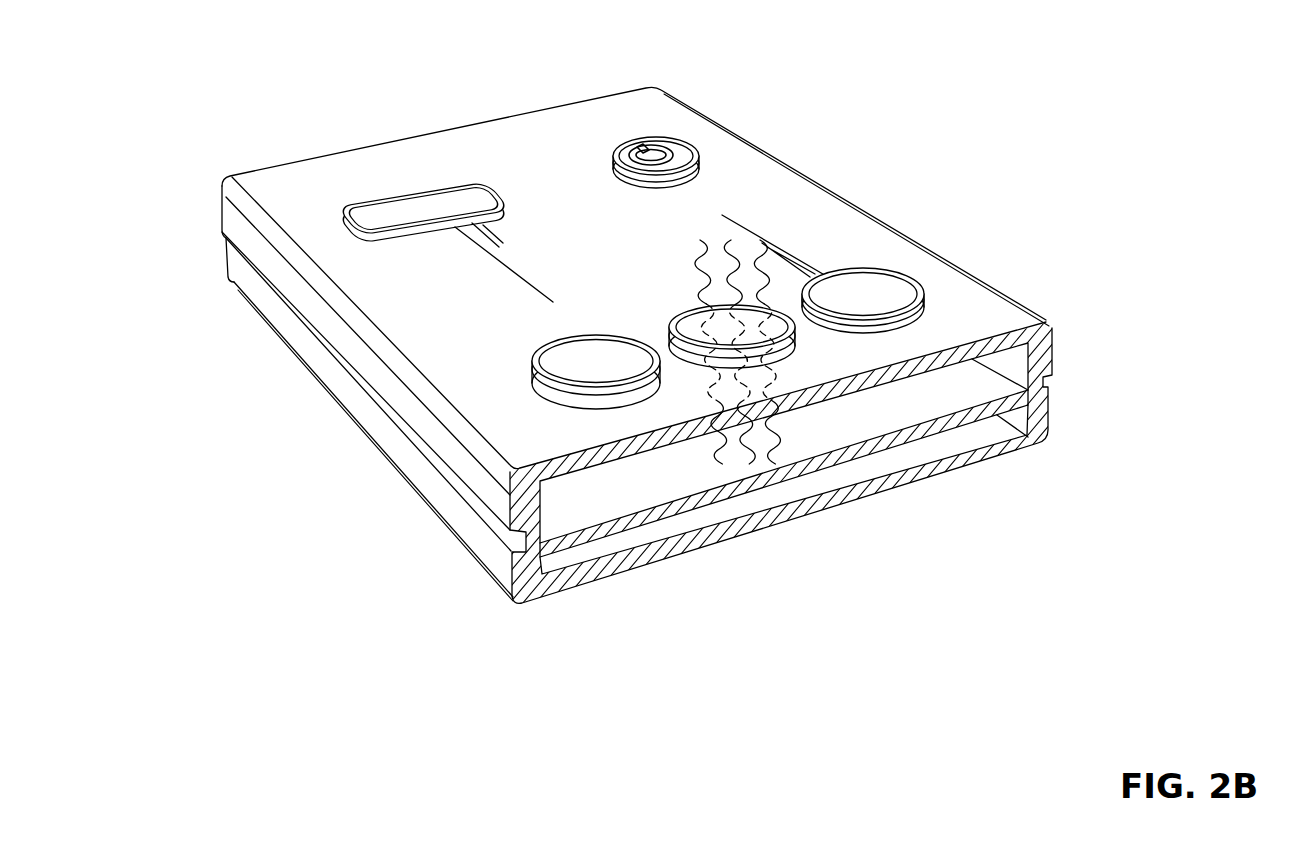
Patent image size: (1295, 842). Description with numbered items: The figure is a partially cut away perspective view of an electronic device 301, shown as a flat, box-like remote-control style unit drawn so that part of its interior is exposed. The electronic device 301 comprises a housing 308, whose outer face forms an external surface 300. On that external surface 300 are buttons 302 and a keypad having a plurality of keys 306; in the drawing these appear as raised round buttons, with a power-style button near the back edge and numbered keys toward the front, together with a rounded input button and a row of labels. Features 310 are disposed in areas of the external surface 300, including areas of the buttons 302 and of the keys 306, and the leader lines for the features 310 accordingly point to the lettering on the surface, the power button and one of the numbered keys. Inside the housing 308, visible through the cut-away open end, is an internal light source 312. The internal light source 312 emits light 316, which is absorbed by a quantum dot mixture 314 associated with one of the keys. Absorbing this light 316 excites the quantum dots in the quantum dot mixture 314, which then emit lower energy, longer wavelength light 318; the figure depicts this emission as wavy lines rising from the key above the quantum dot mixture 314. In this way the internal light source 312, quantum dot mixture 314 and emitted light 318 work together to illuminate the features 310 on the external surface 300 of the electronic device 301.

The external surface 300 is at (583, 117).
The electronic device 301 is at (377, 635).
The buttons 302 is at (705, 165).
The keys 306 is at (898, 290).
The housing 308 is at (268, 316).
The features 310 is at (390, 157).
The internal light source 312 is at (945, 425).
The quantum dot mixture 314 is at (775, 325).
The light 316 is at (772, 437).
The light 318 is at (777, 262).